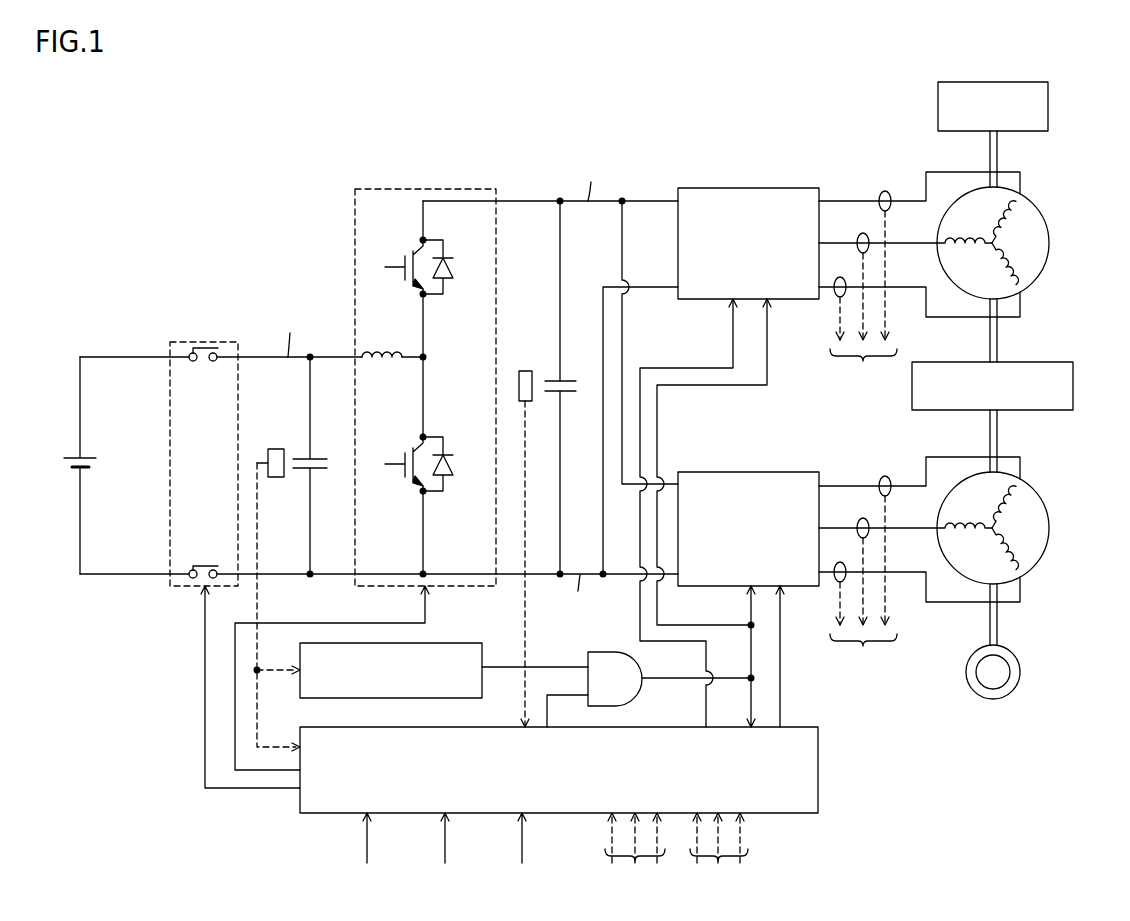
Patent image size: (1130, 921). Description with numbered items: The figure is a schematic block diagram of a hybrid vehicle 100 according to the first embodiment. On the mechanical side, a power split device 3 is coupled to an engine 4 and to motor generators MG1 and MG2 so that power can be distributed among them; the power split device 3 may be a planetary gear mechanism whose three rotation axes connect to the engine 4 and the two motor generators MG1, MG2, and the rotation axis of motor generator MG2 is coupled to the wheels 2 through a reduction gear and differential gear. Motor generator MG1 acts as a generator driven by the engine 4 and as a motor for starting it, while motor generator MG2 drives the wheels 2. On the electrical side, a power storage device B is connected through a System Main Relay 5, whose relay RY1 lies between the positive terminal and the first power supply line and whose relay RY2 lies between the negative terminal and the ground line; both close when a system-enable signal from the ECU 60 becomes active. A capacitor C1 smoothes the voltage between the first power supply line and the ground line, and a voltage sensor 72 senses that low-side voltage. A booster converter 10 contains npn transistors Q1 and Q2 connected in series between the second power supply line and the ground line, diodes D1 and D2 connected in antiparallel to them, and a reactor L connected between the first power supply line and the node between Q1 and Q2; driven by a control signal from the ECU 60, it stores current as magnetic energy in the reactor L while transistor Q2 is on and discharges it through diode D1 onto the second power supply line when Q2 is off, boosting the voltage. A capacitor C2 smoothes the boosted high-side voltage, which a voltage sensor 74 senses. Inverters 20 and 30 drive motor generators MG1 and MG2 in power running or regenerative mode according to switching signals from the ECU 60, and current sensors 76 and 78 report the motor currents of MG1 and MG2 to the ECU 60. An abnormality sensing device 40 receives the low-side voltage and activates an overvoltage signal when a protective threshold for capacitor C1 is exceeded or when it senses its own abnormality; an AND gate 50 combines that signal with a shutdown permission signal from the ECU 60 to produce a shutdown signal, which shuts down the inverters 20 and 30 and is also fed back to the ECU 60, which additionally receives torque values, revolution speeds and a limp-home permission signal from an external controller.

The hybrid vehicle 100 is at (192, 139).
The System Main Relay 5 is at (209, 439).
The booster converter 10 is at (425, 362).
The inverter 20 is at (777, 188).
The inverter 30 is at (778, 472).
The abnormality sensing device 40 is at (447, 643).
The AND gate 50 is at (618, 652).
The Electronic Control Unit 60 is at (819, 777).
The voltage sensor 72 is at (276, 449).
The voltage sensor 74 is at (524, 371).
The current sensor 76 is at (840, 277).
The current sensor 78 is at (864, 539).
The wheels 2 is at (1015, 652).
The power split device 3 is at (1055, 362).
The engine 4 is at (1030, 82).
The power storage device B is at (78, 457).
The relay RY1 is at (212, 346).
The relay RY2 is at (207, 566).
The capacitor C1 is at (316, 459).
The capacitor C2 is at (566, 381).
The reactor L is at (382, 340).
The npn transistor Q1 is at (404, 276).
The npn transistor Q2 is at (403, 461).
The diode D1 is at (452, 267).
The diode D2 is at (452, 464).
The motor generator MG1 is at (1048, 228).
The motor generator MG2 is at (1028, 528).